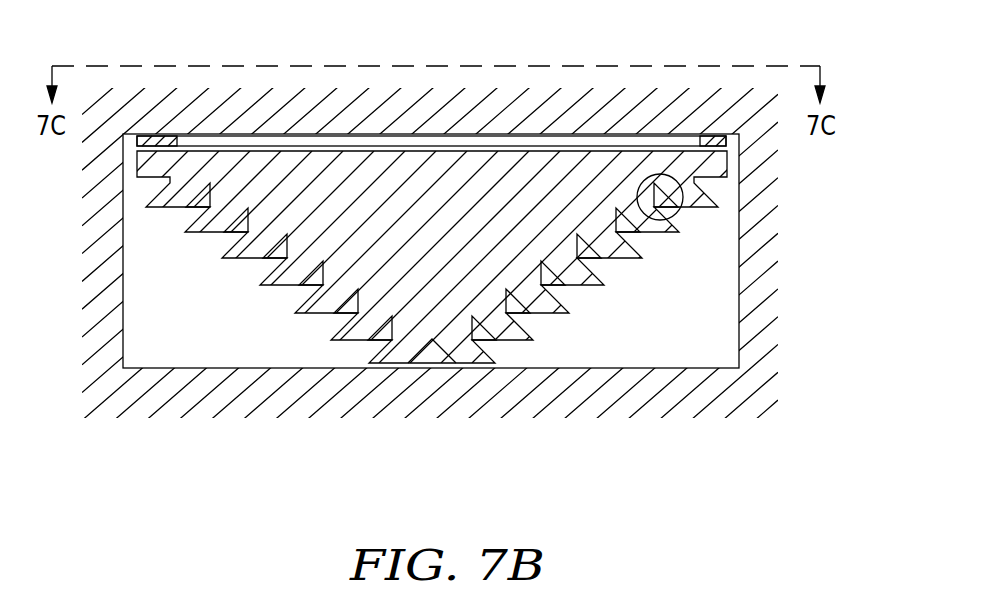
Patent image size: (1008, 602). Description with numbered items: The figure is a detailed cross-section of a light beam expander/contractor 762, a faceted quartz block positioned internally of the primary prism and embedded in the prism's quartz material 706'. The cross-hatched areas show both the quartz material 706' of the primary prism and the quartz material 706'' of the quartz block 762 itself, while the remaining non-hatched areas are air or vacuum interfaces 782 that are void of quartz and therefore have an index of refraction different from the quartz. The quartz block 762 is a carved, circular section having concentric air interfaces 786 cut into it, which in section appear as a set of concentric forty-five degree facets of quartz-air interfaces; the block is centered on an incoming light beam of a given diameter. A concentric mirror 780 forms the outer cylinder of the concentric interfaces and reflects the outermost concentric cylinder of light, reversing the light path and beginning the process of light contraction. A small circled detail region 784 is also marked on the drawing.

The quartz material 706' is at (448, 301).
The quartz material 706'' is at (481, 190).
The concentric mirror 780 is at (149, 136).
The air or vacuum interfaces 782 is at (235, 352).
The light expander/contractor 762 is at (176, 337).
The detail region 784 is at (682, 212).
The concentric air interfaces 786 is at (513, 306).